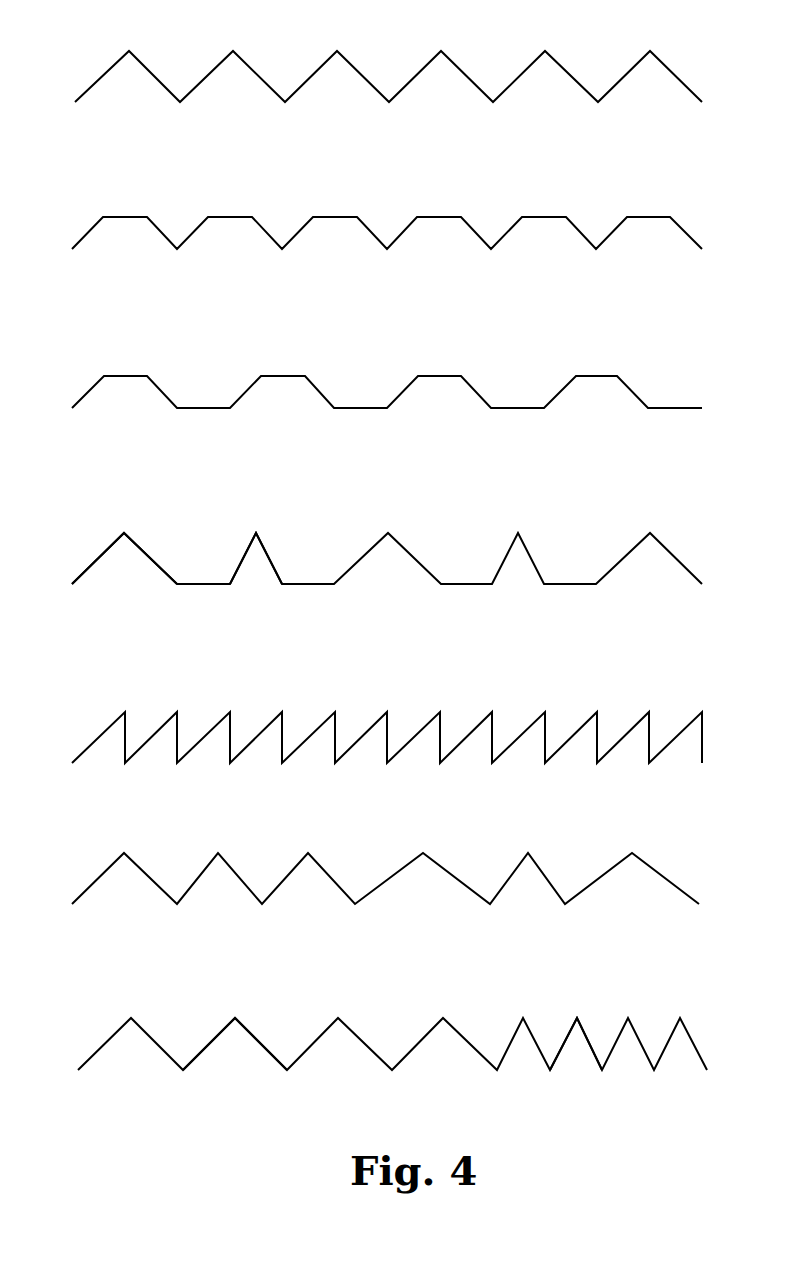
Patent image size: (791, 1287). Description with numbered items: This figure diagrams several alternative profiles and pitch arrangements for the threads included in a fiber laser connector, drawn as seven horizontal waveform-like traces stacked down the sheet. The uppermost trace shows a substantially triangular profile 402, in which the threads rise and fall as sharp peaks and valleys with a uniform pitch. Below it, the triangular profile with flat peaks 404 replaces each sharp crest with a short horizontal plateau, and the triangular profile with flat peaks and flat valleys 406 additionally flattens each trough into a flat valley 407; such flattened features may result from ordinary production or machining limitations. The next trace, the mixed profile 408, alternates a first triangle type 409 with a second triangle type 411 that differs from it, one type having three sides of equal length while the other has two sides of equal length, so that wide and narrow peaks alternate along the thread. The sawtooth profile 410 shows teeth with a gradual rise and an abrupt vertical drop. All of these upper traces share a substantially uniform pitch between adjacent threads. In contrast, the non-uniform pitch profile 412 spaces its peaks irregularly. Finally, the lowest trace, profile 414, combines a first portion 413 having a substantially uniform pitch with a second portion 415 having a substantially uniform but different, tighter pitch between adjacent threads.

The substantially triangular thread profile 402 is at (92, 84).
The triangular thread profile with flat peaks 404 is at (82, 232).
The triangular thread profile with flat peaks and flat valleys 406 is at (83, 391).
The flat valleys 407 is at (209, 410).
The triangular thread profile with two triangle types 408 is at (83, 567).
The first triangle type 409 is at (124, 563).
The second triangle type 411 is at (256, 562).
The sawtooth thread profile 410 is at (83, 747).
The non-uniform pitch thread profile 412 is at (83, 888).
The thread profile with two uniform-pitch portions 414 is at (89, 1053).
The first portion 413 is at (237, 1038).
The second portion 415 is at (585, 1055).